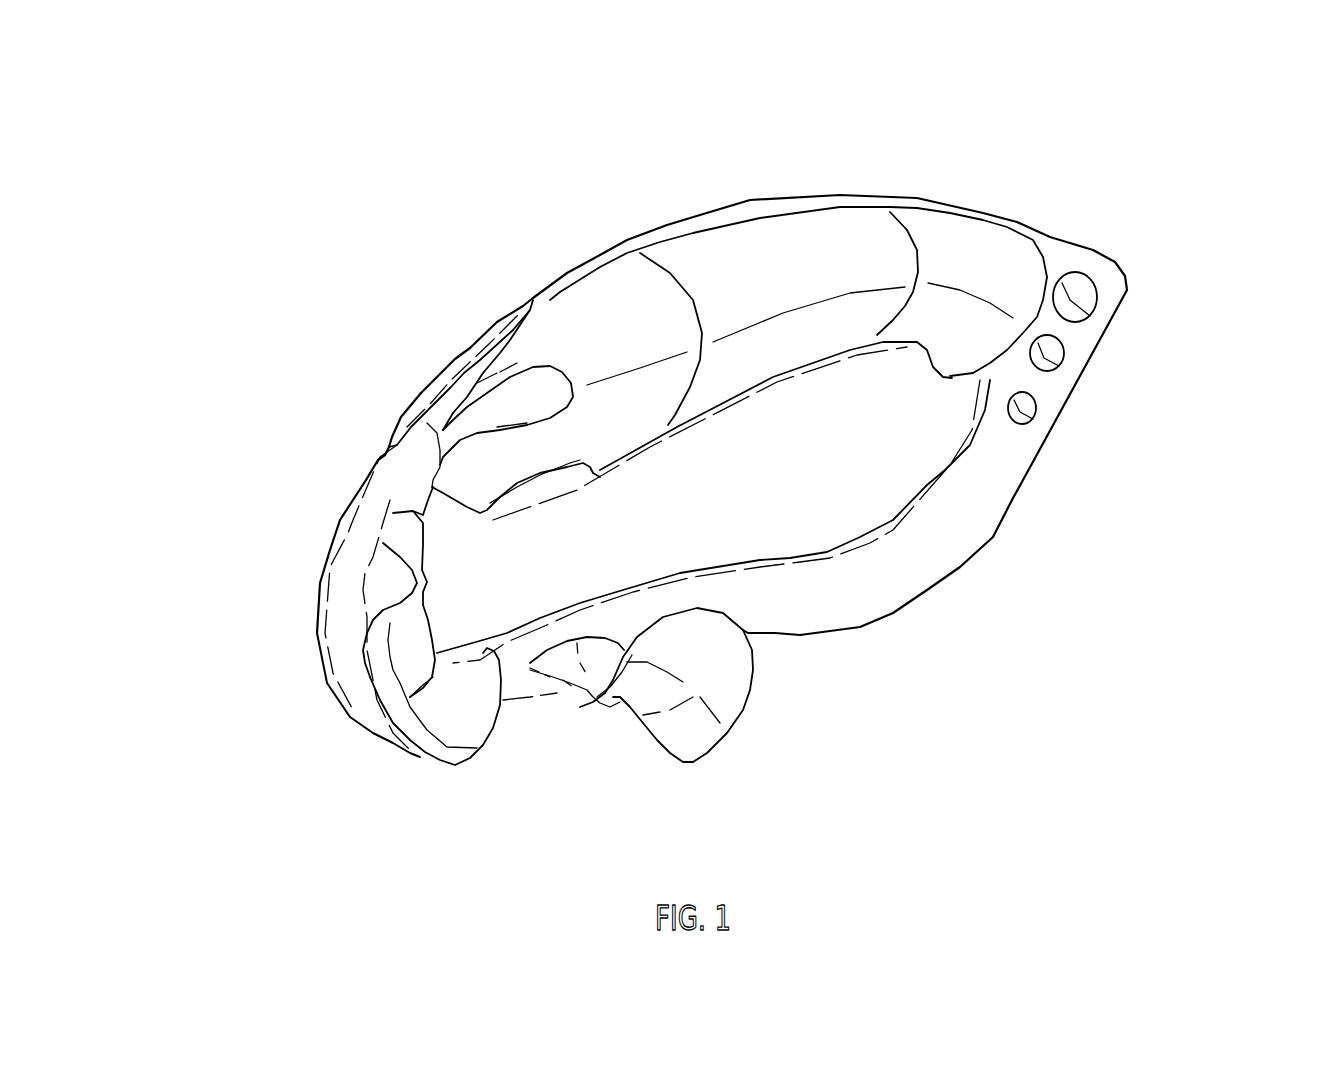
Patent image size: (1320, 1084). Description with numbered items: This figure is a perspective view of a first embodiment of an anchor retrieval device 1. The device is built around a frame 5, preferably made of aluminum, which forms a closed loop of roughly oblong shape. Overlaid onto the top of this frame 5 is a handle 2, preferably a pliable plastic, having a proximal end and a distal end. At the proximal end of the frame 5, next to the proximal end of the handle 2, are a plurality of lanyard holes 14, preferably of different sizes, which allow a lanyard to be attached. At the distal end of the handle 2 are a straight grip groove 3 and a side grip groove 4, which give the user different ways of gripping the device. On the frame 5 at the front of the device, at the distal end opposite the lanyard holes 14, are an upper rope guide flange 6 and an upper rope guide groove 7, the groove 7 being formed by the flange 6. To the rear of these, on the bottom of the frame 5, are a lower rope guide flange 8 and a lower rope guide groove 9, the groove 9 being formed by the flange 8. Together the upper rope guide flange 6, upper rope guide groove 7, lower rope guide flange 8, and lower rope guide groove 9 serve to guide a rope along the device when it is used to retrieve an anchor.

The anchor retrieval device 1 is at (410, 265).
The handle 2 is at (817, 263).
The straight grip groove 3 is at (468, 370).
The side grip groove 4 is at (527, 393).
The frame 5 is at (880, 578).
The upper rope guide flange 6 is at (437, 752).
The upper rope guide groove 7 is at (380, 597).
The lower rope guide flange 8 is at (727, 672).
The lower rope guide groove 9 is at (572, 672).
The lanyard holes 14 is at (1083, 298).